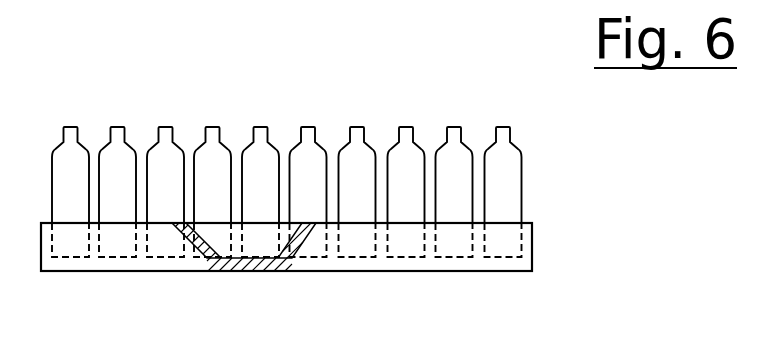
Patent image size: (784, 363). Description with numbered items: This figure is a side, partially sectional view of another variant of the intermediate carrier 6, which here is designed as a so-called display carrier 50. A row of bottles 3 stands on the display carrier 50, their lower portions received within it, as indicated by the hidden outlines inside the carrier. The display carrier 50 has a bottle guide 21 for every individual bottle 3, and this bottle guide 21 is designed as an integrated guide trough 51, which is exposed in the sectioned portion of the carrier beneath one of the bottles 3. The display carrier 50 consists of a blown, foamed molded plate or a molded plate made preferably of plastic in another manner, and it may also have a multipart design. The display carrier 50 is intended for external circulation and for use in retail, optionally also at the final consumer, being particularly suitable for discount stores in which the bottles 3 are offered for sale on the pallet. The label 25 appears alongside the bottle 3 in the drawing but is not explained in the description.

The bottle 3 is at (287, 145).
The bottle 25 is at (253, 142).
The intermediate carrier 6 is at (367, 247).
The display carrier 50 is at (533, 249).
The bottle guide 21 is at (244, 286).
The guide trough 51 is at (234, 258).